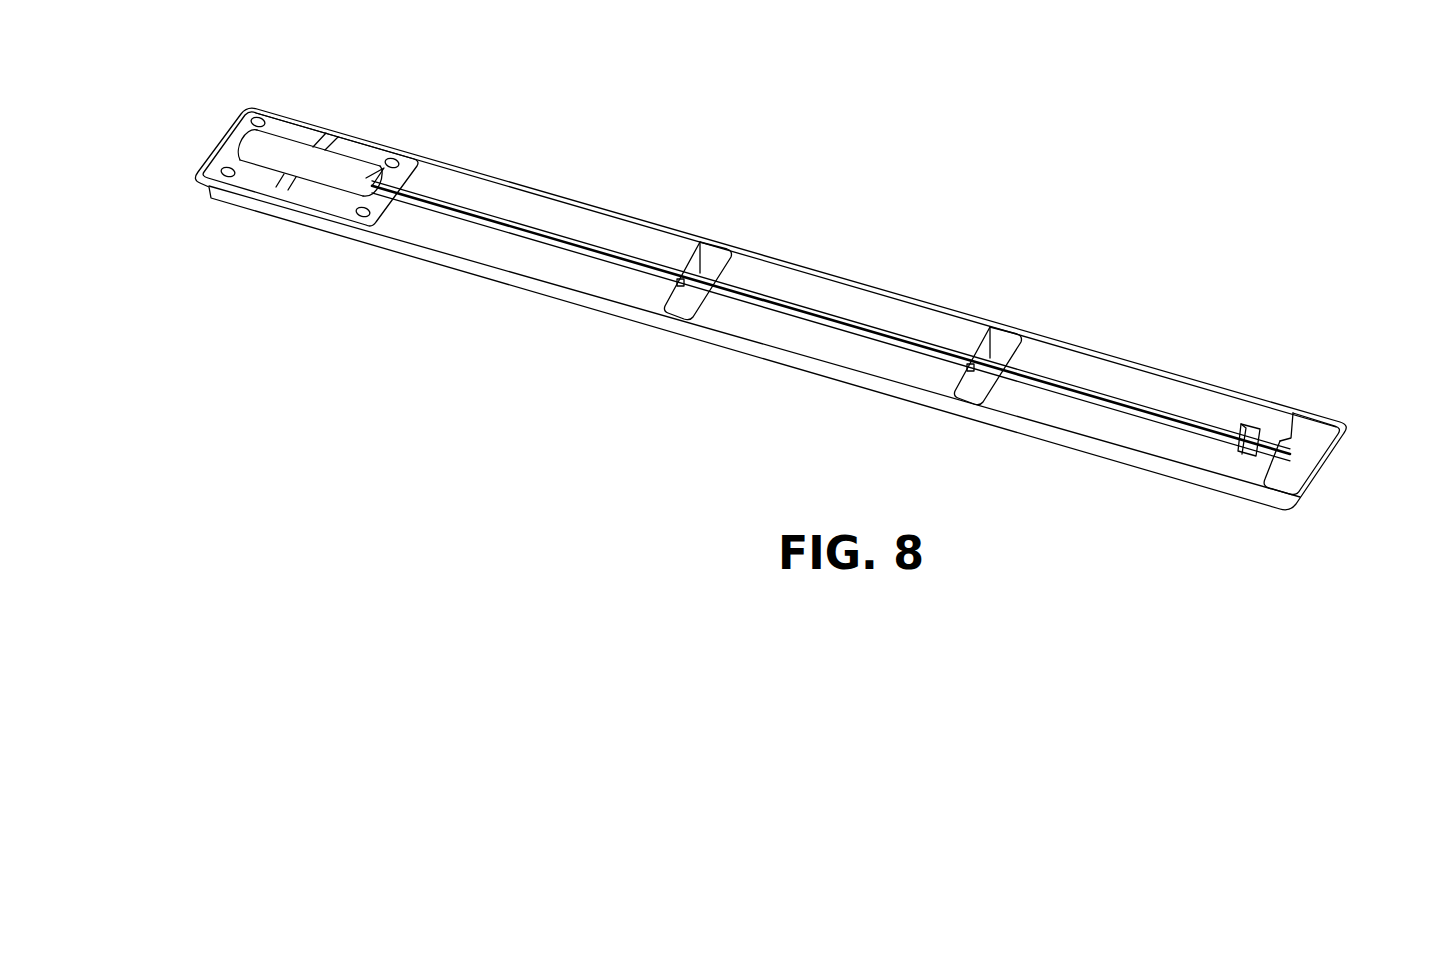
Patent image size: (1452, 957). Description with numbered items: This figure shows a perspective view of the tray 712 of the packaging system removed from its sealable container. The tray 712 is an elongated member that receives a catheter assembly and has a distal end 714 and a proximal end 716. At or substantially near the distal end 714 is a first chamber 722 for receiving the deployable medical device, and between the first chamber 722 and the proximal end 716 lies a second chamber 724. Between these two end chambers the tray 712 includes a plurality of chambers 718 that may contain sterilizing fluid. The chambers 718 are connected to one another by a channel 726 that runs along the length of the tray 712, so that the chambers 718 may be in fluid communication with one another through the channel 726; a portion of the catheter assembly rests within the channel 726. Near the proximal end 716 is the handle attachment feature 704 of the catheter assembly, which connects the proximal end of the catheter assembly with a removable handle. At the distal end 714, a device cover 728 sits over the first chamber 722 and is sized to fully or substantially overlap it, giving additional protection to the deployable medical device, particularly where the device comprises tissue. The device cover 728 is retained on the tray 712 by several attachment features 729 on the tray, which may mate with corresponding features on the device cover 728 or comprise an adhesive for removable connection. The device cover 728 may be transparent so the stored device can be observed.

The handle attachment feature 704 is at (1250, 423).
The tray 712 is at (798, 278).
The distal end 714 is at (228, 141).
The proximal end 716 is at (1336, 463).
The chambers 718 is at (327, 203).
The first chamber 722 is at (327, 143).
The second chamber 724 is at (1304, 455).
The channel 726 is at (883, 327).
The device cover 728 is at (357, 154).
The attachment features 729 is at (394, 158).